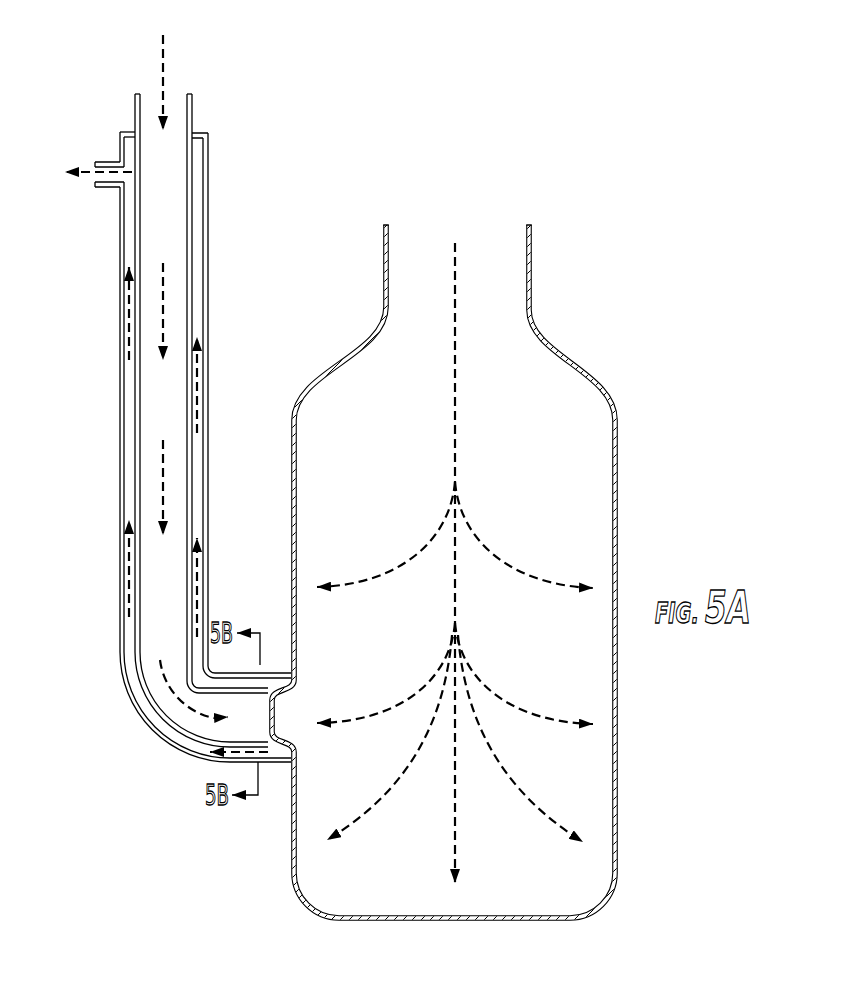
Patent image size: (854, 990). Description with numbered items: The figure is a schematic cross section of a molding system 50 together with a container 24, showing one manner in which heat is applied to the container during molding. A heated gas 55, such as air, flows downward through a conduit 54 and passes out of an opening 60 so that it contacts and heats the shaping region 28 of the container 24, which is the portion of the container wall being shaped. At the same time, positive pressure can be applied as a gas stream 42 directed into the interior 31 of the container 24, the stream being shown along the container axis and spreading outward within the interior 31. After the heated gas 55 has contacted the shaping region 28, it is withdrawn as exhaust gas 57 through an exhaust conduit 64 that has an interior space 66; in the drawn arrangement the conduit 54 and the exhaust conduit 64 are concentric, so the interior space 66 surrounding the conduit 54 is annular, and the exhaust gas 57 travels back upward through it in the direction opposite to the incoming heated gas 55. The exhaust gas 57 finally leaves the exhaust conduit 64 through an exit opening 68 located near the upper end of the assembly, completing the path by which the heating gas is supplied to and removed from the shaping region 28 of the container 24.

The container 24 is at (620, 503).
The shaping region 28 is at (273, 698).
The interior 31 is at (557, 645).
The gas stream 42 is at (457, 412).
The system 50 is at (208, 136).
The conduit 54 is at (192, 97).
The heated gas 55 is at (165, 283).
The exhaust gas 57 is at (130, 322).
The opening 60 is at (268, 715).
The exhaust conduit 64 is at (117, 632).
The interior space 66 is at (128, 482).
The exit opening 68 is at (103, 160).